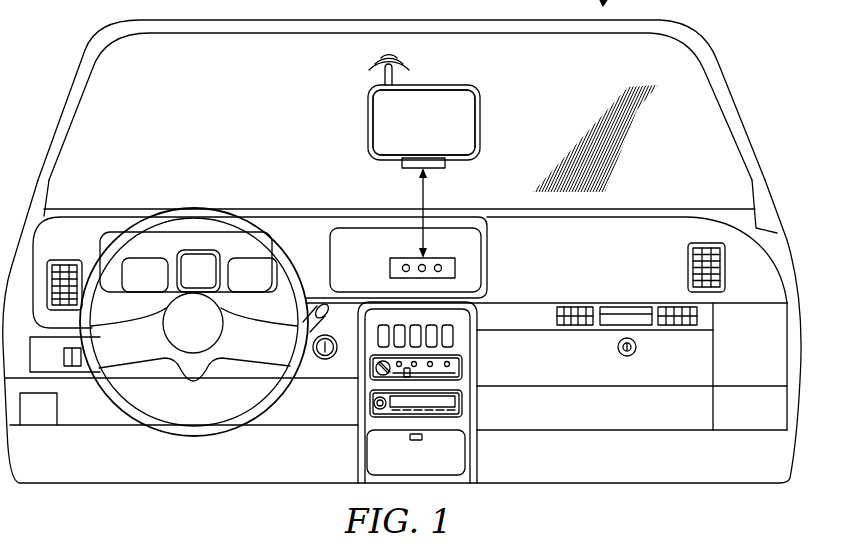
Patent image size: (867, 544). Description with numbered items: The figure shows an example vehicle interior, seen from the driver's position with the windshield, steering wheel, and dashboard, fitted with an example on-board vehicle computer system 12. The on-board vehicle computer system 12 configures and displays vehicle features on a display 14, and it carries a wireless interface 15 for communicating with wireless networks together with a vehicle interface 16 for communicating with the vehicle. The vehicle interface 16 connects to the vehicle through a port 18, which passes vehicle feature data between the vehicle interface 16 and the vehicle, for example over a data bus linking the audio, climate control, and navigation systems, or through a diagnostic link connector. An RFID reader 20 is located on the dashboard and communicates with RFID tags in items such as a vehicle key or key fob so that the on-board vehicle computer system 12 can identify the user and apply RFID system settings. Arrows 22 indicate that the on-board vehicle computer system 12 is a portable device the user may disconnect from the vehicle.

The on-board vehicle computer system 12 is at (358, 114).
The display 14 is at (437, 134).
The wireless interface 15 is at (393, 78).
The vehicle interface 16 is at (402, 166).
The port 18 is at (390, 268).
The RFID reader 20 is at (327, 360).
The arrows 22 is at (423, 197).